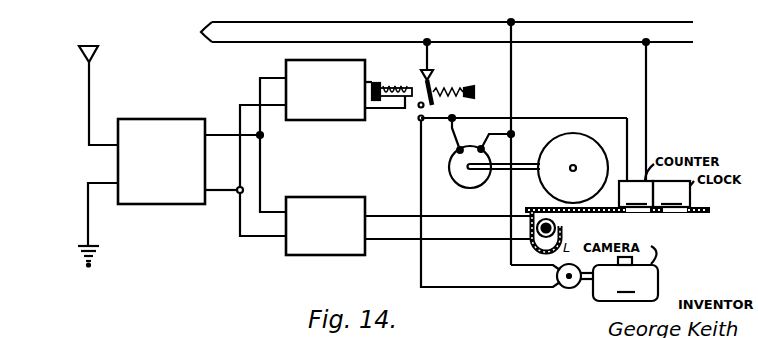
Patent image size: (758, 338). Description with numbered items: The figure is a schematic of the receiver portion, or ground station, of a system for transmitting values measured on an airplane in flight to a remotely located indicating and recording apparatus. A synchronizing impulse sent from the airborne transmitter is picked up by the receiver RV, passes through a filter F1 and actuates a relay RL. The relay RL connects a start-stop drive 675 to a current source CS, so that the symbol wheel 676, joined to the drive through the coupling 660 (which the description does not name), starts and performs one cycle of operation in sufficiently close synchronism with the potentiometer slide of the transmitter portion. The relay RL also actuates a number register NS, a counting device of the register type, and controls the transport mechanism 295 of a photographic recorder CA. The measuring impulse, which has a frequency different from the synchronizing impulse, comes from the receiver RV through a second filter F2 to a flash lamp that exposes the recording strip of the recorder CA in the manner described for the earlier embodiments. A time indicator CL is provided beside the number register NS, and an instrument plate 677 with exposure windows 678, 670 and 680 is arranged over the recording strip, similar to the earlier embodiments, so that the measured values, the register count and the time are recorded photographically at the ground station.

The receiver RV is at (171, 110).
The current source CS is at (430, 32).
The filter F1 is at (316, 113).
The filter F2 is at (338, 182).
The relay RL is at (408, 70).
The start-stop drive 675 is at (465, 188).
The shaft 660 is at (506, 171).
The symbol wheel 676 is at (558, 143).
The instrument plate 677 is at (706, 211).
The exposure window 670 is at (639, 210).
The exposure window 680 is at (677, 210).
The number register NS is at (631, 213).
The time indicator CL is at (672, 213).
The exposure window 678 is at (572, 213).
The photographic recorder CA is at (625, 279).
The transport mechanism 295 is at (571, 289).